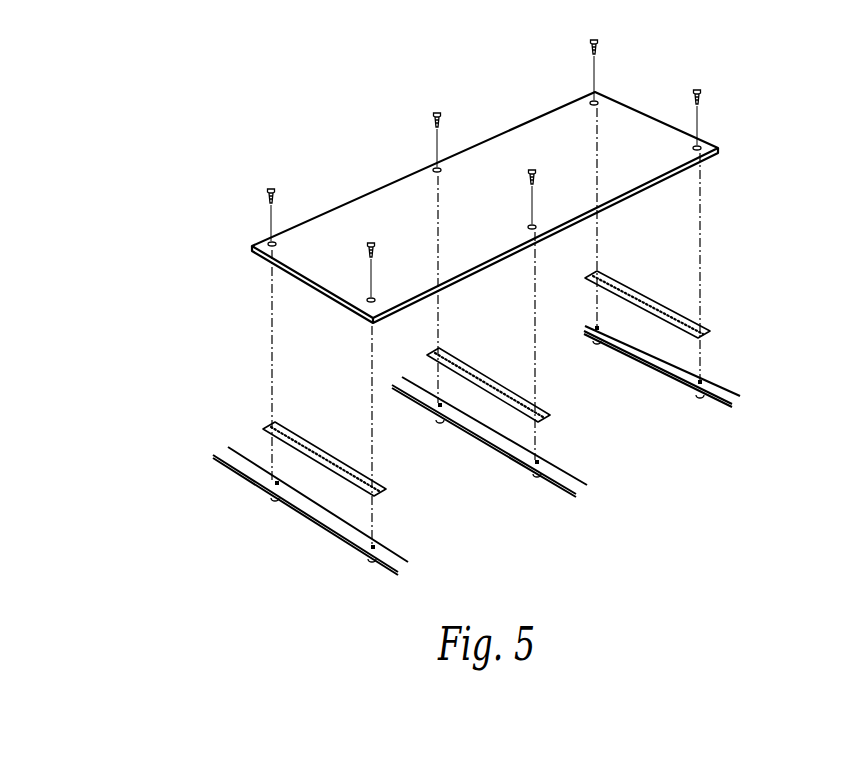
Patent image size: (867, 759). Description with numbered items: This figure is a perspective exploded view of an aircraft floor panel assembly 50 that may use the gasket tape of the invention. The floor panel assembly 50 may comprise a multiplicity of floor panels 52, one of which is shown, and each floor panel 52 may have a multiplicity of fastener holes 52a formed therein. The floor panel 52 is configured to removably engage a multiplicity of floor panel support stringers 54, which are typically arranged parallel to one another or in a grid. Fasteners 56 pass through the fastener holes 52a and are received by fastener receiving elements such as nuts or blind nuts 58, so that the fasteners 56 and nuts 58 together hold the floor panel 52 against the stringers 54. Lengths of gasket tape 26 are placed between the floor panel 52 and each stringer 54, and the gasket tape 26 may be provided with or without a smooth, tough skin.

The floor panel assembly 50 is at (665, 66).
The floor panel 52 is at (588, 163).
The fastener hole 52a is at (703, 138).
The fastener 56 is at (600, 49).
The gasket tape 26 is at (300, 438).
The floor panel support stringer 54 is at (718, 392).
The nut 58 is at (372, 562).